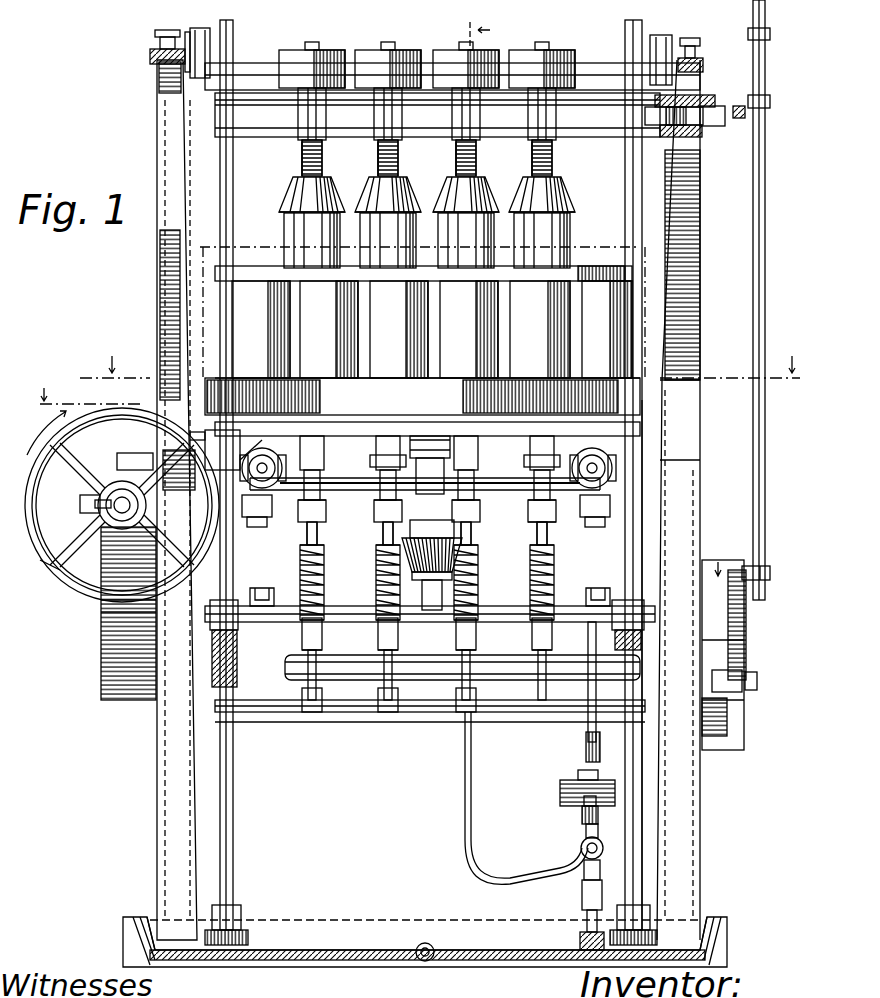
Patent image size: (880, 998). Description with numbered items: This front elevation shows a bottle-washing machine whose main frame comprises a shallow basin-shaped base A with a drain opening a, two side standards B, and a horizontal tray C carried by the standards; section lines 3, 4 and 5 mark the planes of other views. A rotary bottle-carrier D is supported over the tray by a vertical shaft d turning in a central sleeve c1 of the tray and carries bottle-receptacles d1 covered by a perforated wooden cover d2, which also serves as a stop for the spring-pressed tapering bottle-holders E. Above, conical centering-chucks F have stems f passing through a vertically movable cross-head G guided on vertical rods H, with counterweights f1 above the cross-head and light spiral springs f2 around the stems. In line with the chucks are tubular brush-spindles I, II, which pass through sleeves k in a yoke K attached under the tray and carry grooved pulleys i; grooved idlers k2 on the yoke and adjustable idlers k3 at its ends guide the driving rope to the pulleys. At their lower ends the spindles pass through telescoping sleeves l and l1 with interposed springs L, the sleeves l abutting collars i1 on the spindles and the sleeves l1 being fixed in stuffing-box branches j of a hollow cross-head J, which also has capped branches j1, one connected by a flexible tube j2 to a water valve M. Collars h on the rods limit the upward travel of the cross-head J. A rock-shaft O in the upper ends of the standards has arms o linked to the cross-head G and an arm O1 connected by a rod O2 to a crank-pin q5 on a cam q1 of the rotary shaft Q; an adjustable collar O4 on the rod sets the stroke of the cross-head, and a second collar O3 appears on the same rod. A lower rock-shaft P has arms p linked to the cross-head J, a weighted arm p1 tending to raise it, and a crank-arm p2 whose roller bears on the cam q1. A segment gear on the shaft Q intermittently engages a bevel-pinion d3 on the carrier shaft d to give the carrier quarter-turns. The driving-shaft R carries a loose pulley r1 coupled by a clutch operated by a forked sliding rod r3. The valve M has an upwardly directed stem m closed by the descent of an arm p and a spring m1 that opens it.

The horizontal rock-shaft O is at (593, 80).
The parallel arms o is at (200, 30).
The arm O1 is at (738, 112).
The rod O2 is at (765, 265).
The lower collar O3 is at (770, 102).
The adjustable collar O4 is at (770, 35).
The section line 3 3 is at (477, 27).
The section line 4 4 is at (444, 371).
The section line 5 5 is at (377, 485).
The counterweights f1 is at (427, 155).
The stems f is at (324, 158).
The light spiral springs f2 is at (302, 158).
The conical centering-chucks F is at (295, 190).
The vertically-movable cross-head G is at (437, 115).
The vertical rods H is at (222, 176).
The bottle-holders E is at (645, 800).
The cover d2 is at (572, 270).
The bottle-receptacles d1 is at (432, 329).
The rotary bottle-carrier D is at (378, 378).
The side standards B is at (690, 282).
The yoke K is at (344, 424).
The tray C is at (422, 396).
The sleeves k is at (322, 462).
The grooved idlers k2 is at (460, 468).
The idlers k3 is at (258, 448).
The central sleeve c1 is at (430, 465).
The grooved pulleys i is at (428, 469).
The rotary tubes I is at (380, 512).
The rotary tubes II is at (558, 518).
The collars i1 is at (320, 535).
The spiral springs L is at (324, 555).
The flanged sleeve l is at (376, 570).
The flanged sleeve l1 is at (330, 592).
The bevel-pinion d3 is at (430, 575).
The vertical shaft d is at (434, 588).
The rotary shaft Q is at (424, 612).
The collars h is at (230, 604).
The parallel arms p is at (262, 590).
The horizontal rock-shaft P is at (380, 716).
The branches j is at (340, 640).
The hollow cross-head J is at (430, 692).
The branches j1 is at (490, 688).
The flexible tube j2 is at (472, 790).
The adjustably-weighted arm p1 is at (586, 744).
The valve stem m is at (575, 775).
The spring m1 is at (580, 795).
The valve M is at (575, 840).
The base A is at (385, 922).
The drain opening a is at (432, 950).
The crank-pin q5 is at (772, 574).
The cam q1 is at (750, 644).
The crank-arm p2 is at (730, 705).
The horizontal driving-shaft R is at (148, 505).
The forked sliding rod r3 is at (82, 503).
The pulley r1 is at (55, 572).